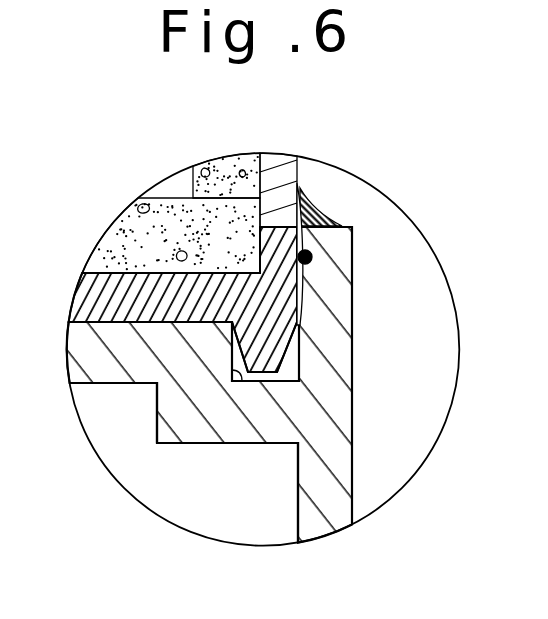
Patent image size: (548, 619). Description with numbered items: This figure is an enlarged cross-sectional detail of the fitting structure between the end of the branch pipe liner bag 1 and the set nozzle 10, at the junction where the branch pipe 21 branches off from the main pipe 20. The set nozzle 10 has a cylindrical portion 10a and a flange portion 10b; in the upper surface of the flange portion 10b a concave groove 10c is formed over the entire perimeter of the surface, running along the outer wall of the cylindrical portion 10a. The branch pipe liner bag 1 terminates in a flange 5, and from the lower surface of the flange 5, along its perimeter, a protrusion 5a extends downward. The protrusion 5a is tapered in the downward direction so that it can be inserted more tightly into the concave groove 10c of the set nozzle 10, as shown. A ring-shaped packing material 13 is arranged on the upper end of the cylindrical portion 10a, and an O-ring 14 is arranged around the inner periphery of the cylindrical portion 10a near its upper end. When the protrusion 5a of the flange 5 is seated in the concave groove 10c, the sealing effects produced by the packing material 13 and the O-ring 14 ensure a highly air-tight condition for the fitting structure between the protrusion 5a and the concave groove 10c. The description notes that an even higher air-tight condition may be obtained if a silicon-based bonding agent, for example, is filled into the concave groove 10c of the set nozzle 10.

The branch pipe liner bag 1 is at (272, 154).
The flange 5 is at (83, 302).
The protrusion 5a is at (288, 350).
The set nozzle 10 is at (352, 428).
The cylindrical portion 10a is at (315, 508).
The flange portion 10b is at (118, 372).
The concave groove 10c is at (242, 383).
The ring-shaped packing material 13 is at (305, 222).
The O-ring 14 is at (307, 259).
The main pipe 20 is at (128, 237).
The branch pipe 21 is at (225, 172).